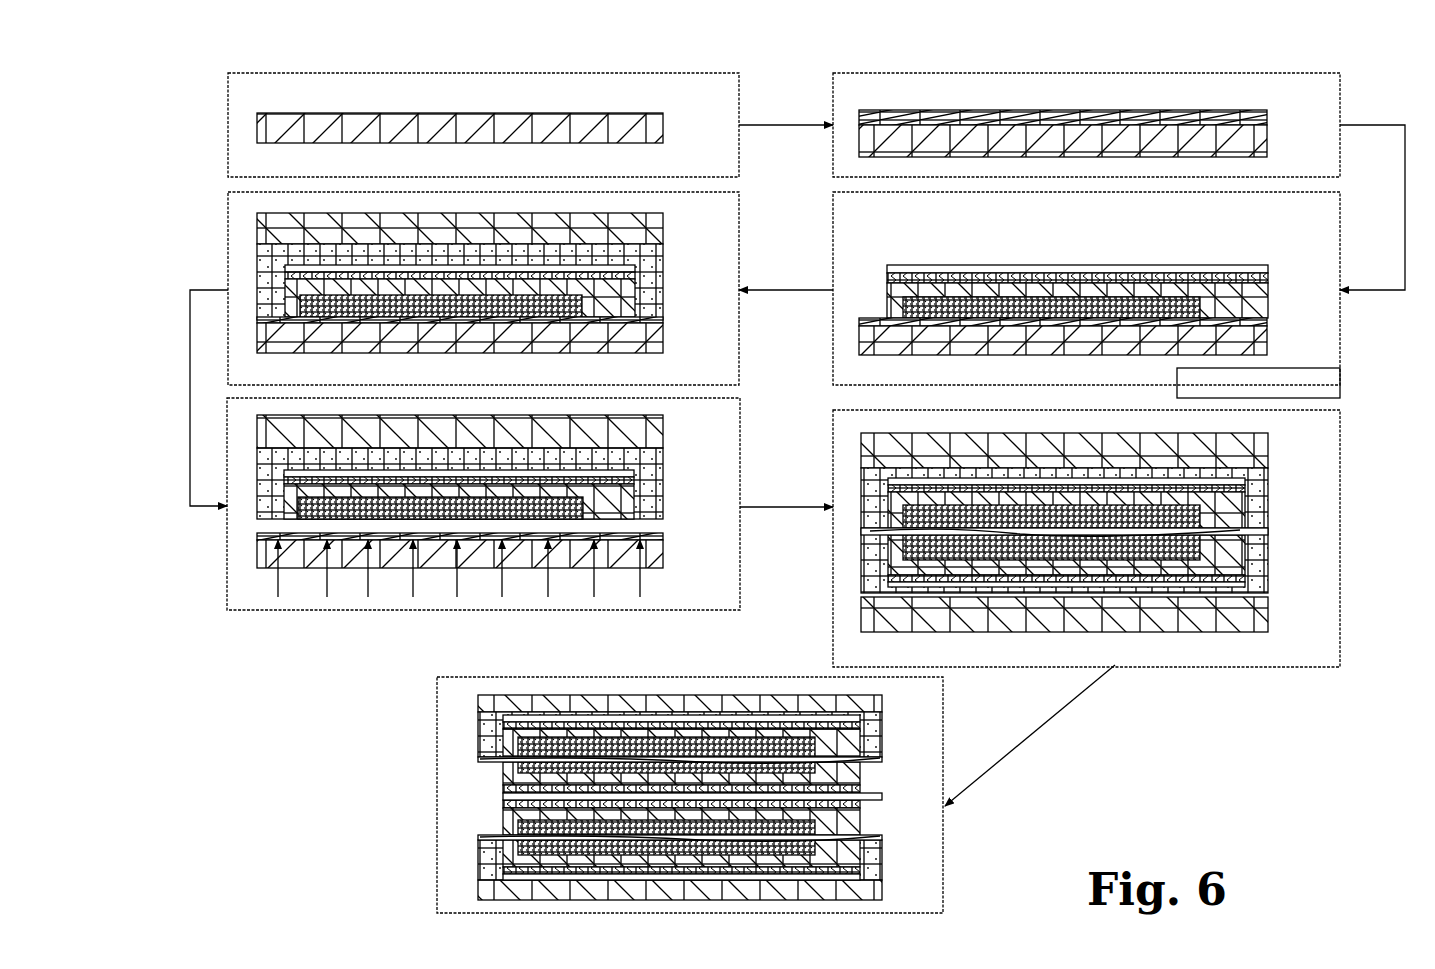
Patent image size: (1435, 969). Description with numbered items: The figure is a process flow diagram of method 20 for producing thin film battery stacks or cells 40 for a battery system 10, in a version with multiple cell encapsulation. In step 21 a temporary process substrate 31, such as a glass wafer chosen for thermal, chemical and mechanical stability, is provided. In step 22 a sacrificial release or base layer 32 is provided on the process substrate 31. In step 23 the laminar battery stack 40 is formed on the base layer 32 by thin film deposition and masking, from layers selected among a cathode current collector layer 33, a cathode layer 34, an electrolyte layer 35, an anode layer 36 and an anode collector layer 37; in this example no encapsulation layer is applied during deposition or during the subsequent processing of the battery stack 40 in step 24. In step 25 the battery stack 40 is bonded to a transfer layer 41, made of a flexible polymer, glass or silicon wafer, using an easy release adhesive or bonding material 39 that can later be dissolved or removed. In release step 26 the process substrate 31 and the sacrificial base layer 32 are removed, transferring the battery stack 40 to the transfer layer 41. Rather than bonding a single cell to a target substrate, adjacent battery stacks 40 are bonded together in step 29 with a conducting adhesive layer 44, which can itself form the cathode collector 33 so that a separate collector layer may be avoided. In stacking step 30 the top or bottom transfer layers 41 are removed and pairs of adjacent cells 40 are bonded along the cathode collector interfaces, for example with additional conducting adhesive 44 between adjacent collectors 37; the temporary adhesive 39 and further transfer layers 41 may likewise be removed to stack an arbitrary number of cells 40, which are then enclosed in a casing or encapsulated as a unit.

The battery system 10 is at (955, 878).
The process method 20 is at (168, 95).
The process substrate providing step 21 is at (739, 105).
The base layer providing step 22 is at (1340, 100).
The battery layer forming step 23 is at (1340, 240).
The battery stack processing step 24 is at (1340, 385).
The transfer plate attaching step 25 is at (739, 215).
The process substrate releasing step 26 is at (740, 425).
The stack bonding step 29 is at (1340, 462).
The stacking step 30 is at (605, 677).
The process substrate 31 is at (286, 139).
The base layer 32 is at (900, 116).
The cathode current collector layer 33 is at (870, 530).
The cathode layer 34 is at (945, 300).
The electrolyte layer 35 is at (1065, 282).
The anode layer 36 is at (1268, 290).
The anode collector layer 37 is at (1268, 268).
The releasable bonding material 39 is at (640, 300).
The battery stack 40 is at (655, 262).
The transfer layer 41 is at (293, 240).
The conducting adhesive layer 44 is at (1135, 560).